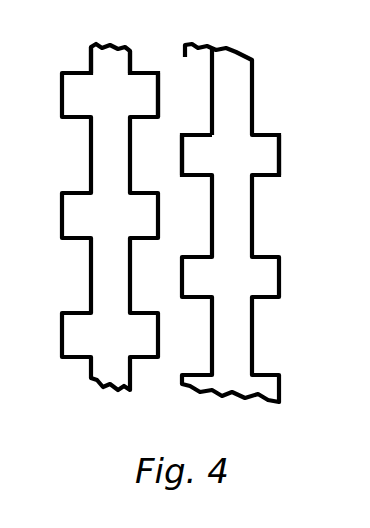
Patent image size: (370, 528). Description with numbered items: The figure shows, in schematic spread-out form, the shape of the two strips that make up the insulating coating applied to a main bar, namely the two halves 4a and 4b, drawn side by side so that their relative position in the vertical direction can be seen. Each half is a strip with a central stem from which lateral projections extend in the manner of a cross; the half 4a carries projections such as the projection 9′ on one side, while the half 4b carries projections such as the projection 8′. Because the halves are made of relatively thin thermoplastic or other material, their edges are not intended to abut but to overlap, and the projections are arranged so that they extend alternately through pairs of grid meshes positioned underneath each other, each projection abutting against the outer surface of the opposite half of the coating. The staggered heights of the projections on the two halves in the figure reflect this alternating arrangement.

The half of the coating 4a is at (82, 340).
The half of the coating 4b is at (258, 384).
The projection 9′ is at (82, 90).
The projection 8′ is at (193, 145).